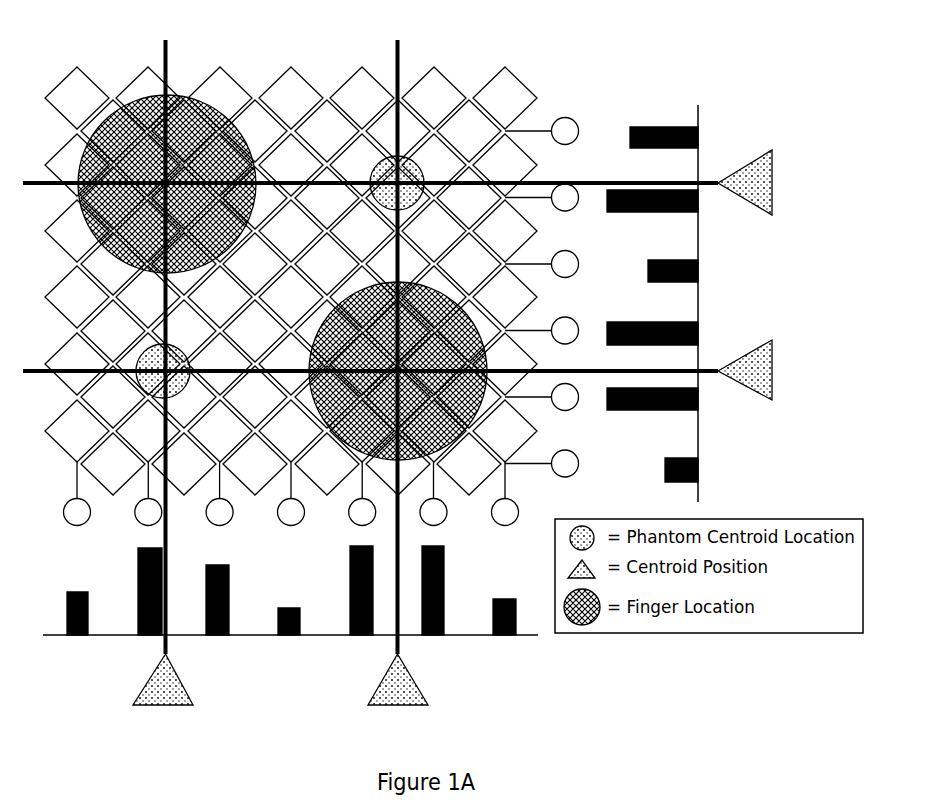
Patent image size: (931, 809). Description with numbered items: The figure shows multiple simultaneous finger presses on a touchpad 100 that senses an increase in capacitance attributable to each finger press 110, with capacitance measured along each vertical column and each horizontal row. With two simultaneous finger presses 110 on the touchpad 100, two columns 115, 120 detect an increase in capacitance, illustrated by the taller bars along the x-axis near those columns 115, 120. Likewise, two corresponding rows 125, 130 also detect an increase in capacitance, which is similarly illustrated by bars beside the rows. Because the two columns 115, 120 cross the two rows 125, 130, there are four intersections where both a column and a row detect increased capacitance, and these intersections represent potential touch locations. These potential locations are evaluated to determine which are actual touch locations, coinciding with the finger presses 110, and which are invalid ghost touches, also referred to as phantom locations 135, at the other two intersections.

The touchpad 100 is at (475, 66).
The finger press 110 is at (106, 137).
The column 115 is at (133, 705).
The column 120 is at (368, 705).
The row 125 is at (768, 151).
The row 130 is at (768, 341).
The phantom location 135 is at (373, 167).